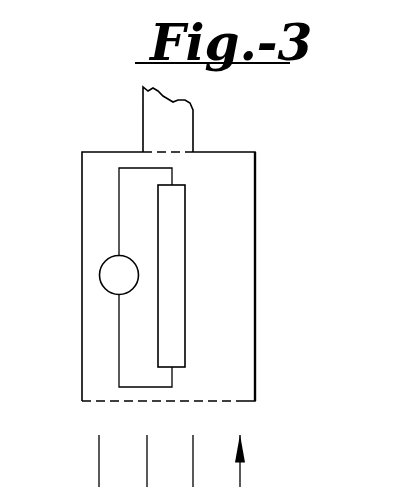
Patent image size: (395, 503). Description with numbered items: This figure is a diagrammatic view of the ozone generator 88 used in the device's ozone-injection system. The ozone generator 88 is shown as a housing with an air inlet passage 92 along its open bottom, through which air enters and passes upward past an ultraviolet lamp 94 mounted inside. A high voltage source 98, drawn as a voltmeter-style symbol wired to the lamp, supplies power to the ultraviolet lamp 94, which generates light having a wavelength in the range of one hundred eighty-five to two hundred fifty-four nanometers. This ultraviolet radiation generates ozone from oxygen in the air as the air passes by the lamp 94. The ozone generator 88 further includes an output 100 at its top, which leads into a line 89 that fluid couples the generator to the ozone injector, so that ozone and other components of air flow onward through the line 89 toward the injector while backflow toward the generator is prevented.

The ozone generator 88 is at (264, 165).
The line 89 is at (195, 129).
The output 100 is at (172, 150).
The air inlet passage 92 is at (239, 405).
The ultraviolet lamp 94 is at (186, 340).
The high voltage source 98 is at (106, 260).